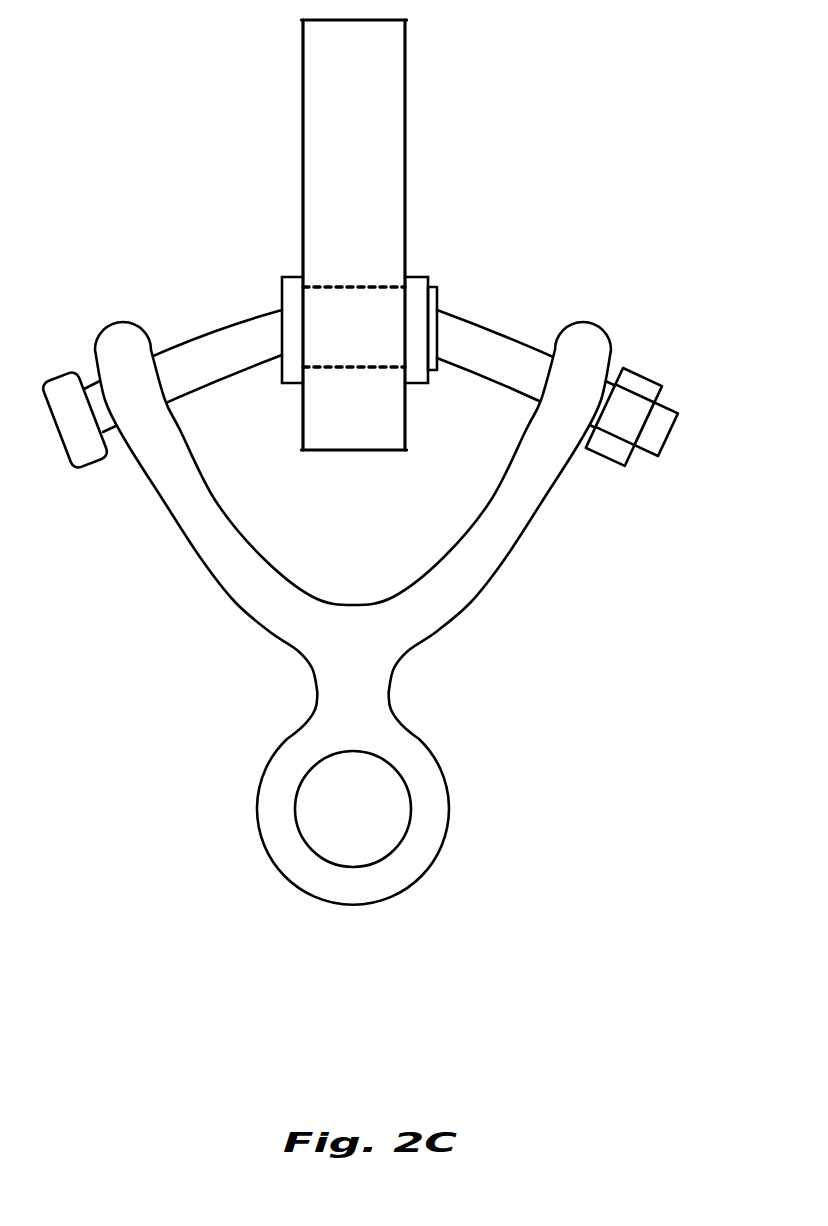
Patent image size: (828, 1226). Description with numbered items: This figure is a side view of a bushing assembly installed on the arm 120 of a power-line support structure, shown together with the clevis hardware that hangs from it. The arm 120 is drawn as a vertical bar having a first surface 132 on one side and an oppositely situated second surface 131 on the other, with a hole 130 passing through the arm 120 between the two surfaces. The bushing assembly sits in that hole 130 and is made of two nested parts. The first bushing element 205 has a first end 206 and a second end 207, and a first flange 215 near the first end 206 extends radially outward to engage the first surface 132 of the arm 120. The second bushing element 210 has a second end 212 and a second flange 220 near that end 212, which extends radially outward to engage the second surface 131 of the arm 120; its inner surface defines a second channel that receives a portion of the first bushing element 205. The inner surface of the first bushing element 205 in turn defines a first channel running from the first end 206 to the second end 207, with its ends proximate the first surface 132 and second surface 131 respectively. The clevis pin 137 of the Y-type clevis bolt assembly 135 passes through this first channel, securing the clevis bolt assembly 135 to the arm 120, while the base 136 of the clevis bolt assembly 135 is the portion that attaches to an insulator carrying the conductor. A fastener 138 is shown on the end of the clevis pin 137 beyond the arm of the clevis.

The arm 120 is at (335, 258).
The hole 130 is at (355, 386).
The second surface 131 is at (417, 184).
The first surface 132 is at (291, 123).
The Y-type clevis bolt assembly 135 is at (326, 613).
The base 136 is at (487, 560).
The clevis pin 137 is at (507, 350).
The fastener nut 138 is at (634, 400).
The first bushing element 205 is at (284, 399).
The first end 206 is at (295, 310).
The second end 207 is at (449, 291).
The second bushing element 210 is at (427, 403).
The second end 212 is at (434, 277).
The first flange 215 is at (290, 268).
The second flange 220 is at (417, 265).